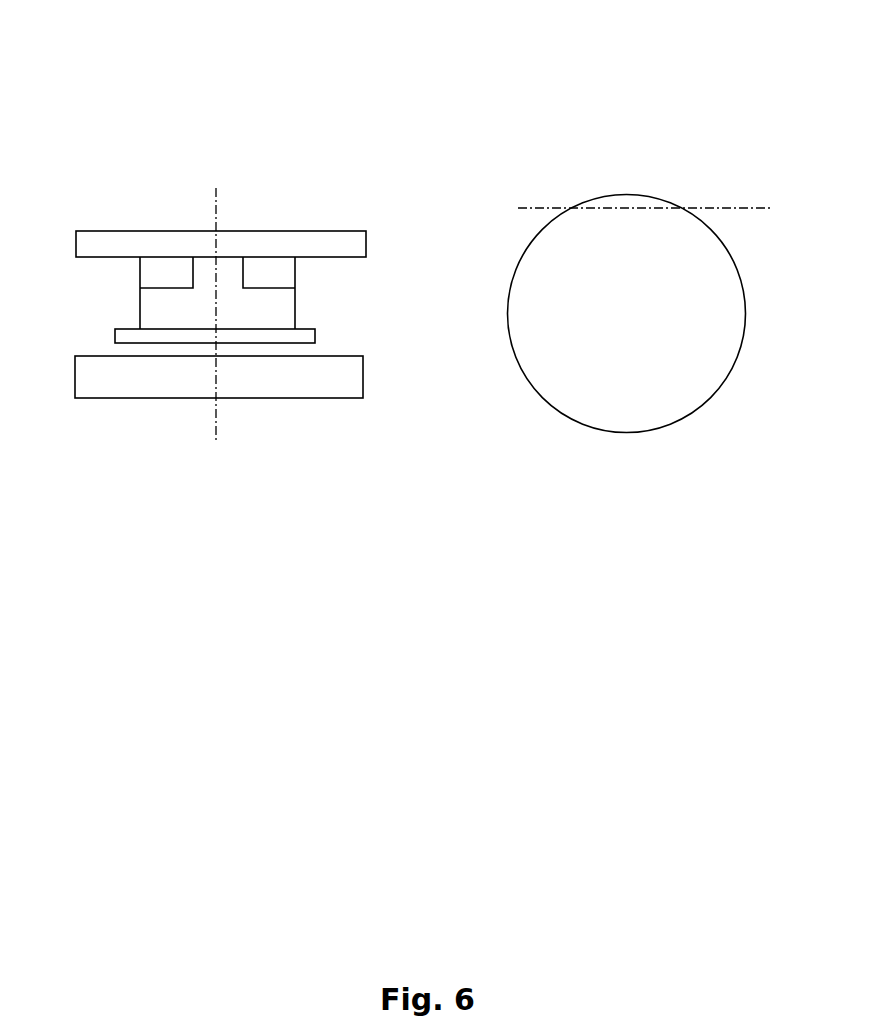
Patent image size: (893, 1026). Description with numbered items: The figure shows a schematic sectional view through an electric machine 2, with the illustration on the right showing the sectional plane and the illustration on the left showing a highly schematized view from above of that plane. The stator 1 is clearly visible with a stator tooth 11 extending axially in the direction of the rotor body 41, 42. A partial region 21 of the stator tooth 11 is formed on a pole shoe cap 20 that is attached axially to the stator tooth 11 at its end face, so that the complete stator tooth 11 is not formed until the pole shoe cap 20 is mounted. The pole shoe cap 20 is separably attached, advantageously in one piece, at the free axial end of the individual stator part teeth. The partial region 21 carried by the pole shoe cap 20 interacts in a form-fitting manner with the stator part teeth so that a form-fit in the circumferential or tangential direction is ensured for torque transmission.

The stator 1 is at (267, 233).
The electric machine 2 is at (262, 124).
The stator tooth 11 is at (287, 278).
The pole shoe cap 20 is at (306, 337).
The partial region of the stator tooth 21 is at (162, 302).
The rotor body 41 is at (349, 377).
The rotor body 42 is at (219, 377).